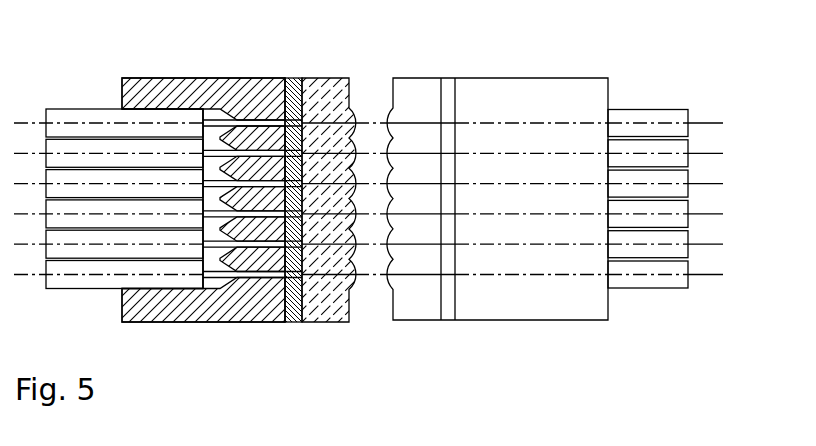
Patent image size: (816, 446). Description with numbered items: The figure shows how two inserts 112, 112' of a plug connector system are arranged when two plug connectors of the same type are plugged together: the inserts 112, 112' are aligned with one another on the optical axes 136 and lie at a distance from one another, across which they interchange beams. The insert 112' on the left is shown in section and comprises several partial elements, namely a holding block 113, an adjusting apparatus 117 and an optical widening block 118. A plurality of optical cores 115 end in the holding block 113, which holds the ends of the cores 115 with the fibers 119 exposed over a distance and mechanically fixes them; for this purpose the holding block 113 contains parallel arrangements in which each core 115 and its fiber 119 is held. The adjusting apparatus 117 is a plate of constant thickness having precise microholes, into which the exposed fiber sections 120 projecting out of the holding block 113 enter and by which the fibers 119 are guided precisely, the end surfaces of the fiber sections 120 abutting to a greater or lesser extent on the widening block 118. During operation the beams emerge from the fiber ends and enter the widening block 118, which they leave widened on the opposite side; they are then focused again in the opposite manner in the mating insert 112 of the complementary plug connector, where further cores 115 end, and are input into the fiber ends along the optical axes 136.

The insert 112 is at (497, 248).
The insert of complementary plug connector 112' is at (203, 248).
The holding block 113 is at (208, 93).
The optical cores 115 is at (680, 270).
The adjusting apparatus 117 is at (293, 92).
The optical widening block 118 is at (332, 92).
The fibers 119 is at (268, 283).
The fiber sections 120 is at (321, 300).
The optical axes 136 is at (550, 275).